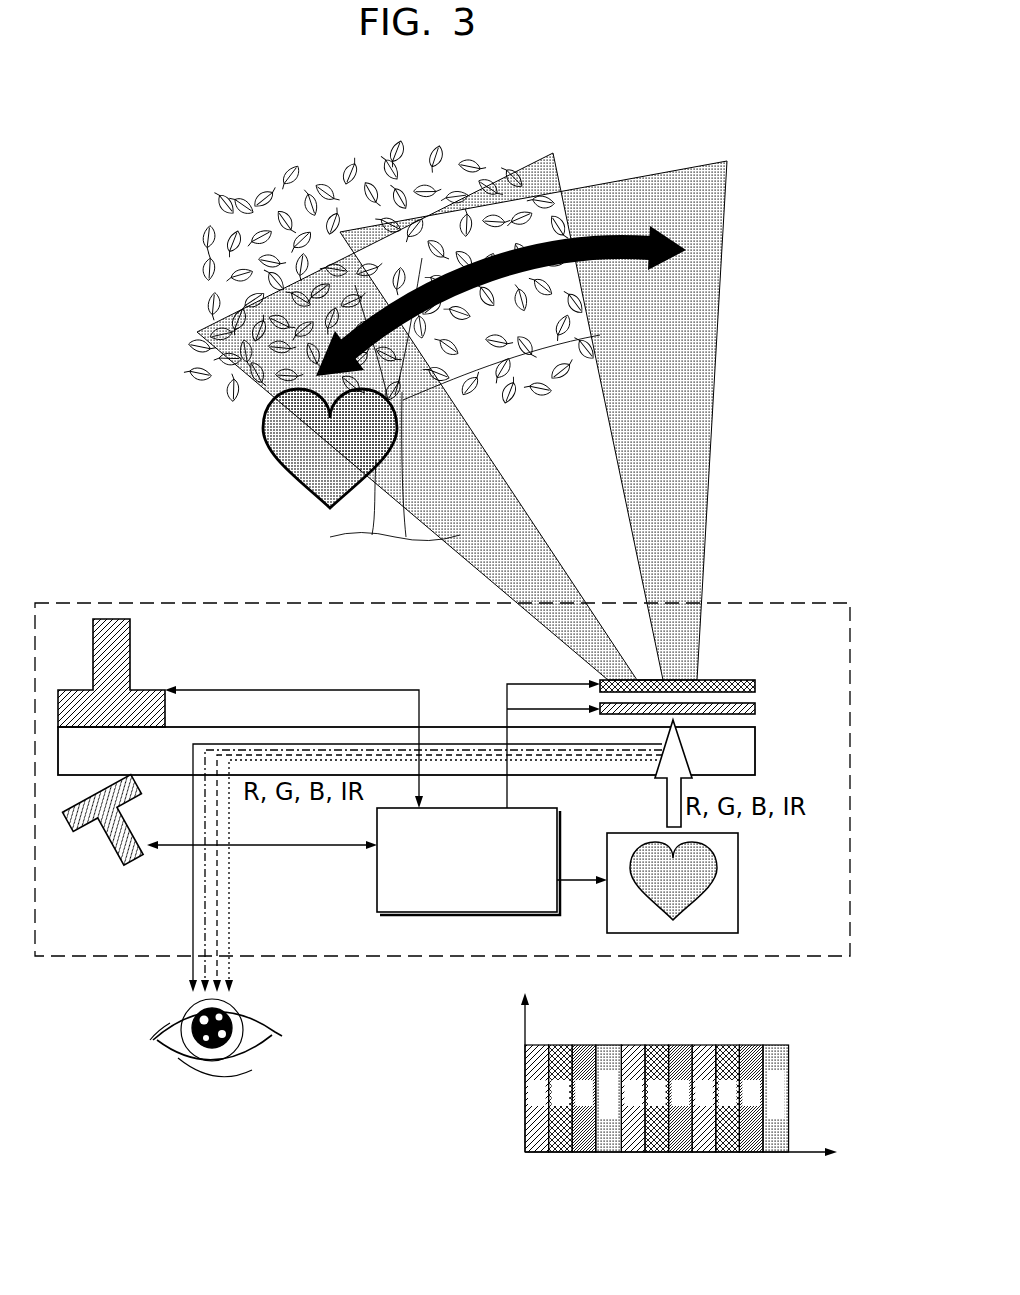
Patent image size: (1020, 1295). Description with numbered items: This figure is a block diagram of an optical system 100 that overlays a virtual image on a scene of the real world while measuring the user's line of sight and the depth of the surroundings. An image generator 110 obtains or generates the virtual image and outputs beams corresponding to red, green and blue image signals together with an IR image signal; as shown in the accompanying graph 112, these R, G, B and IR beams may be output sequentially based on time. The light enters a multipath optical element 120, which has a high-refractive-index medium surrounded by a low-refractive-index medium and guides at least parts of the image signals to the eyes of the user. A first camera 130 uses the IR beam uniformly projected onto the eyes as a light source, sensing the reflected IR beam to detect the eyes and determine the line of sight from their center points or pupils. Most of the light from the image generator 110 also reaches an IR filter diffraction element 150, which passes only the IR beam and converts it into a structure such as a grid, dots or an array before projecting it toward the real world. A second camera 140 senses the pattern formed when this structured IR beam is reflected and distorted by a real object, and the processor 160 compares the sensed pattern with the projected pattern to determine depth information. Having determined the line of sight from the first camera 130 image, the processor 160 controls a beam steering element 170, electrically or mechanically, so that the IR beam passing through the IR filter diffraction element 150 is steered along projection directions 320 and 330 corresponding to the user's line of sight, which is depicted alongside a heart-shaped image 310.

The optical system 100 is at (805, 603).
The image generator 110 is at (742, 898).
The graph 112 is at (807, 1049).
The multipath optical element 120 is at (757, 745).
The first camera 130 is at (102, 836).
The second camera 140 is at (76, 690).
The IR filter diffraction element 150 is at (757, 708).
The processor 160 is at (375, 900).
The beam steering element 170 is at (757, 686).
The virtual image (heart) 310 is at (285, 445).
The projection direction 320 is at (488, 565).
The projection direction 330 is at (697, 343).